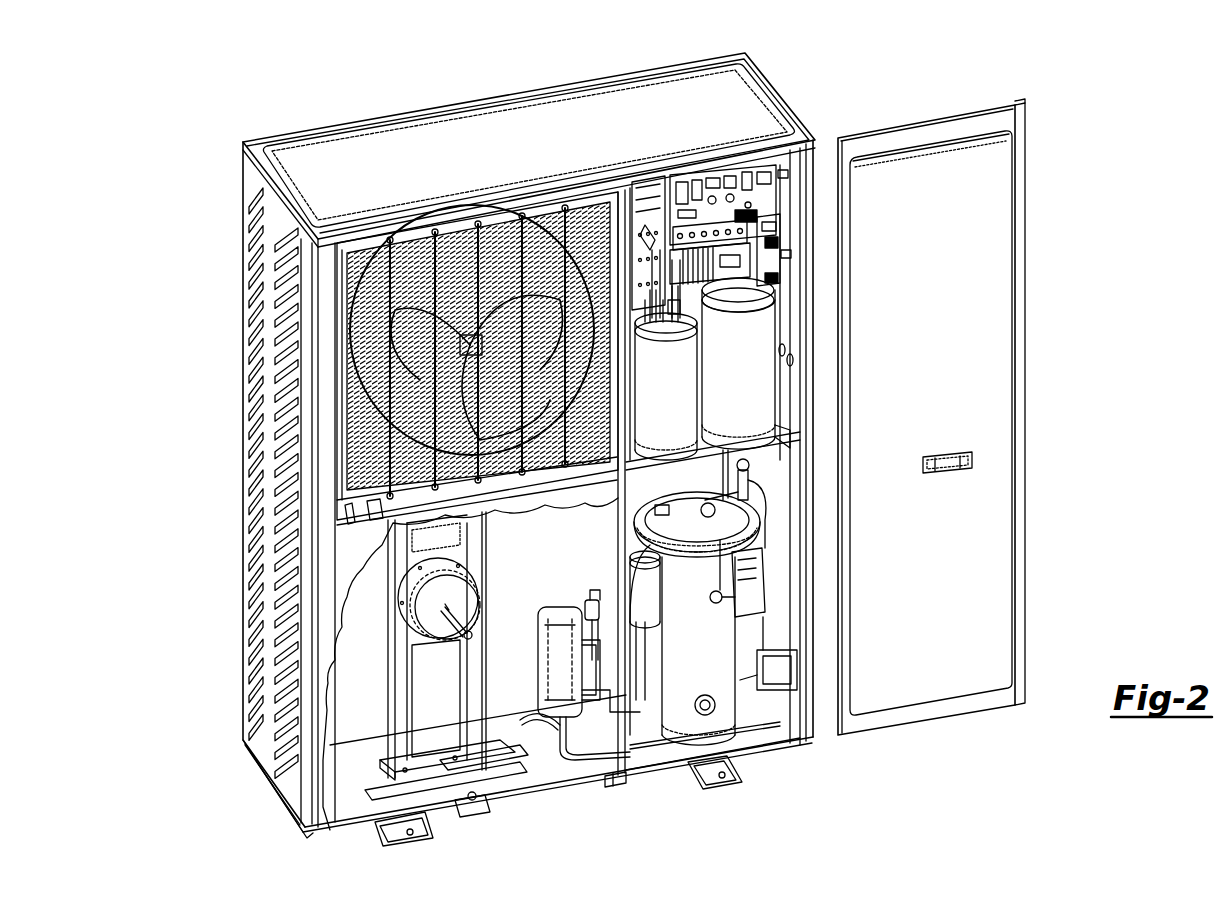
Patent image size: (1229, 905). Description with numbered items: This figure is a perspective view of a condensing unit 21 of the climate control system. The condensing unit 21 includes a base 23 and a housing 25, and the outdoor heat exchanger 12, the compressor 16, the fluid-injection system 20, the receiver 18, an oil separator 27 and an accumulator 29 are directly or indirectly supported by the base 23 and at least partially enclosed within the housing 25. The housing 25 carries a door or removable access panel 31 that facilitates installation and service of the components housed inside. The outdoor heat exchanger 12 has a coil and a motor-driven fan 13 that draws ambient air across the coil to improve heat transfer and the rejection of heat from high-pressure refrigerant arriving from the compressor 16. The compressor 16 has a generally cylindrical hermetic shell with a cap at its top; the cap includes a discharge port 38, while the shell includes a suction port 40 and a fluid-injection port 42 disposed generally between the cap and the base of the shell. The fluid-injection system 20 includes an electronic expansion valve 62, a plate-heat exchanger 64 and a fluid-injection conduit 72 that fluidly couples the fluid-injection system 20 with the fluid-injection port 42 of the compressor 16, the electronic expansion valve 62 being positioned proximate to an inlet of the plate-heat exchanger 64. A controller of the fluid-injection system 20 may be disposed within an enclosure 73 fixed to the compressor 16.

The condensing unit 21 is at (445, 74).
The outdoor heat exchanger 12 is at (538, 218).
The fan 13 is at (494, 228).
The access panel 31 is at (1020, 295).
The accumulator 29 is at (767, 362).
The oil separator 27 is at (677, 383).
The discharge port 38 is at (735, 484).
The suction port 40 is at (755, 532).
The enclosure 73 is at (755, 548).
The compressor 16 is at (645, 495).
The electronic expansion valve 62 is at (593, 595).
The plate-heat exchanger 64 is at (547, 602).
The fluid-injection port 42 is at (710, 594).
The fluid-injection conduit 72 is at (735, 673).
The receiver 18 is at (505, 660).
The housing 25 is at (300, 790).
The fluid-injection system 20 is at (568, 760).
The base 23 is at (610, 783).